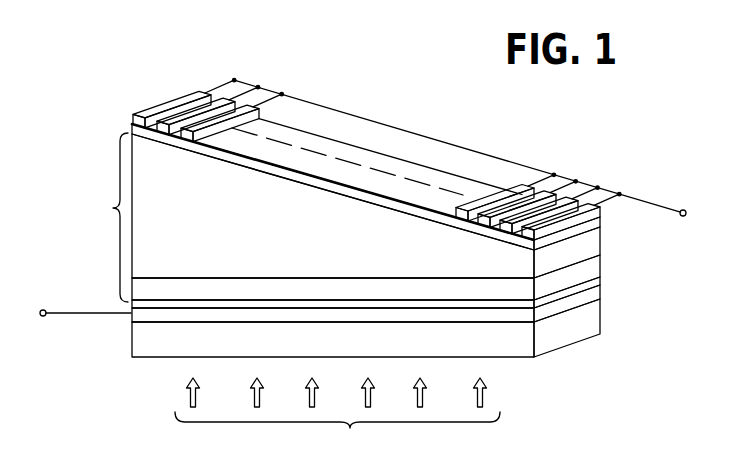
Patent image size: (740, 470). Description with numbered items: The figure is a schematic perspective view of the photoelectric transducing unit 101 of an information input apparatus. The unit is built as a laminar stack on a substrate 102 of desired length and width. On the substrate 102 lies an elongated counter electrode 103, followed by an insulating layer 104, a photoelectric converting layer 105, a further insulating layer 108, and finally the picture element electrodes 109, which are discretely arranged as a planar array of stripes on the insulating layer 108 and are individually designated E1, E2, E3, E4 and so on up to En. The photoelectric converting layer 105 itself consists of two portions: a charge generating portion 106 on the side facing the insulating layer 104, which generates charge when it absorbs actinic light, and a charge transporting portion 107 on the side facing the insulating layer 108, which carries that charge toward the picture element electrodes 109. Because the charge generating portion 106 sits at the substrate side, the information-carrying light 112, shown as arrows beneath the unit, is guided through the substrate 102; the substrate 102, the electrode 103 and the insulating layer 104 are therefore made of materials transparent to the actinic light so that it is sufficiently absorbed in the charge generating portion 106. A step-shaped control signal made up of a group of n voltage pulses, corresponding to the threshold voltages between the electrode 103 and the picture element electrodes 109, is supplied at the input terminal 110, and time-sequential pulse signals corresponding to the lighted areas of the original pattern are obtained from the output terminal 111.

The photoelectric transducing unit 101 is at (363, 197).
The substrate 102 is at (603, 311).
The counter electrode 103 is at (603, 293).
The insulating layer 104 is at (603, 283).
The photoelectric converting layer 105 is at (96, 217).
The charge generating portion 106 is at (603, 263).
The charge transporting portion 107 is at (603, 240).
The insulating layer 108 is at (603, 222).
The picture element electrodes 109 is at (196, 121).
The input terminal 110 is at (683, 209).
The output terminal 111 is at (43, 310).
The information-carrying light 112 is at (337, 419).
The picture element electrode E1 is at (527, 239).
The picture element electrode E2 is at (504, 232).
The picture element electrode E3 is at (482, 226).
The picture element electrode E4 is at (458, 220).
The picture element electrode En is at (138, 129).